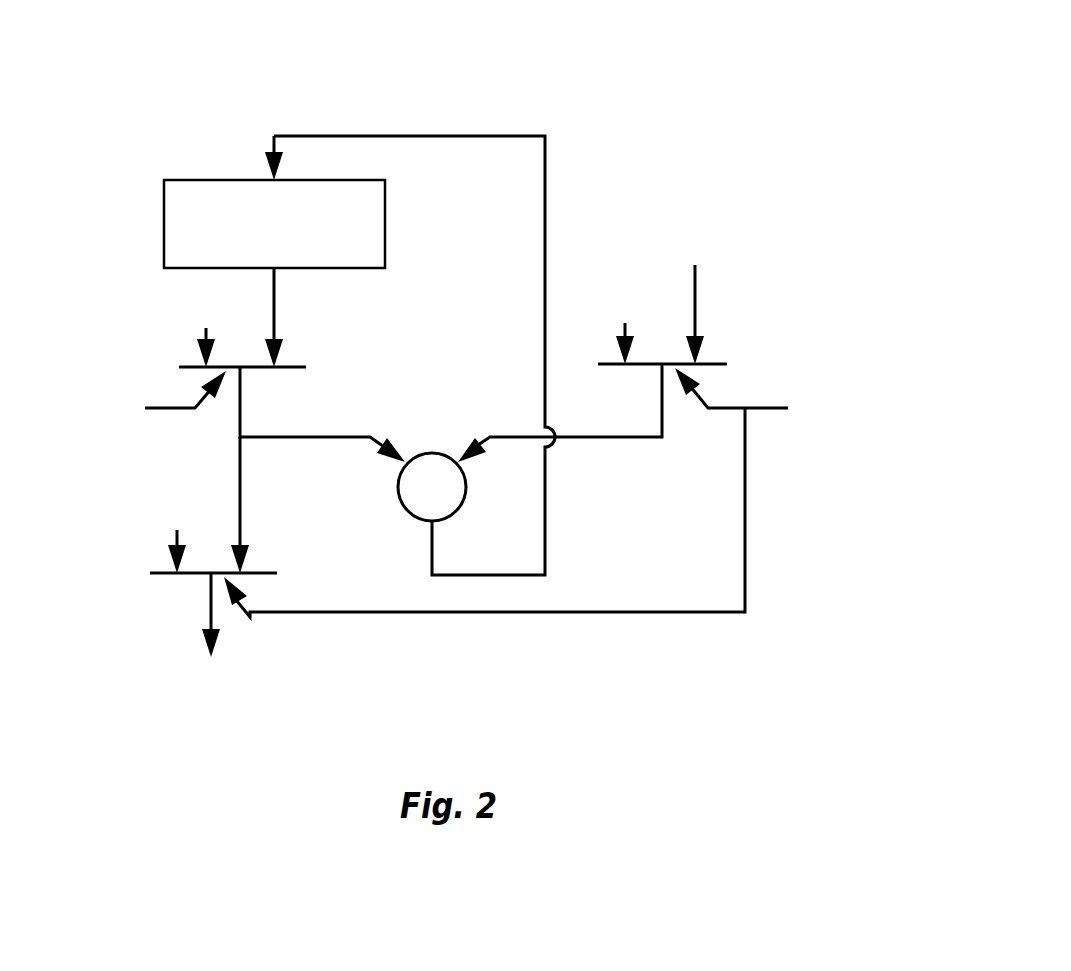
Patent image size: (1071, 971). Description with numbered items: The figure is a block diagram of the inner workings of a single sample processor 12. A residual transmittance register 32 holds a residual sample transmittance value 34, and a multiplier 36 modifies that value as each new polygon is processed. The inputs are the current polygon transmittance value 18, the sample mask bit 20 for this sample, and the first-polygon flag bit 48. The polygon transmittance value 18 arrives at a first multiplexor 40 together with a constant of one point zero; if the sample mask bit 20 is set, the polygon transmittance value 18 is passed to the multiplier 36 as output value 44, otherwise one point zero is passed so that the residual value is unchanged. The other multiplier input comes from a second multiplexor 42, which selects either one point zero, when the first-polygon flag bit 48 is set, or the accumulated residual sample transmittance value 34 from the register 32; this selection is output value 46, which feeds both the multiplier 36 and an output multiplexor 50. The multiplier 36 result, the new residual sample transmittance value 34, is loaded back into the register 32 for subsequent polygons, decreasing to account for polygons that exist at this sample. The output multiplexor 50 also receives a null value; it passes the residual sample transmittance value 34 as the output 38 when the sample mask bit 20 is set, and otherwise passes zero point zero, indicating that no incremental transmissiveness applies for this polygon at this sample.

The sample processor 12 is at (603, 150).
The polygon transmittance value 18 is at (805, 254).
The sample mask bit 20 is at (868, 447).
The residual transmittance register 32 is at (385, 227).
The residual sample transmittance value 34 is at (380, 263).
The multiplier 36 is at (463, 495).
The output value 38 is at (272, 687).
The first multiplexor 40 is at (716, 364).
The second multiplexor 42 is at (300, 367).
The output value of first multiplexor 44 is at (605, 438).
The output value of second multiplexor 46 is at (297, 438).
The first-polygon flag bit 48 is at (98, 447).
The output multiplexor 50 is at (160, 575).